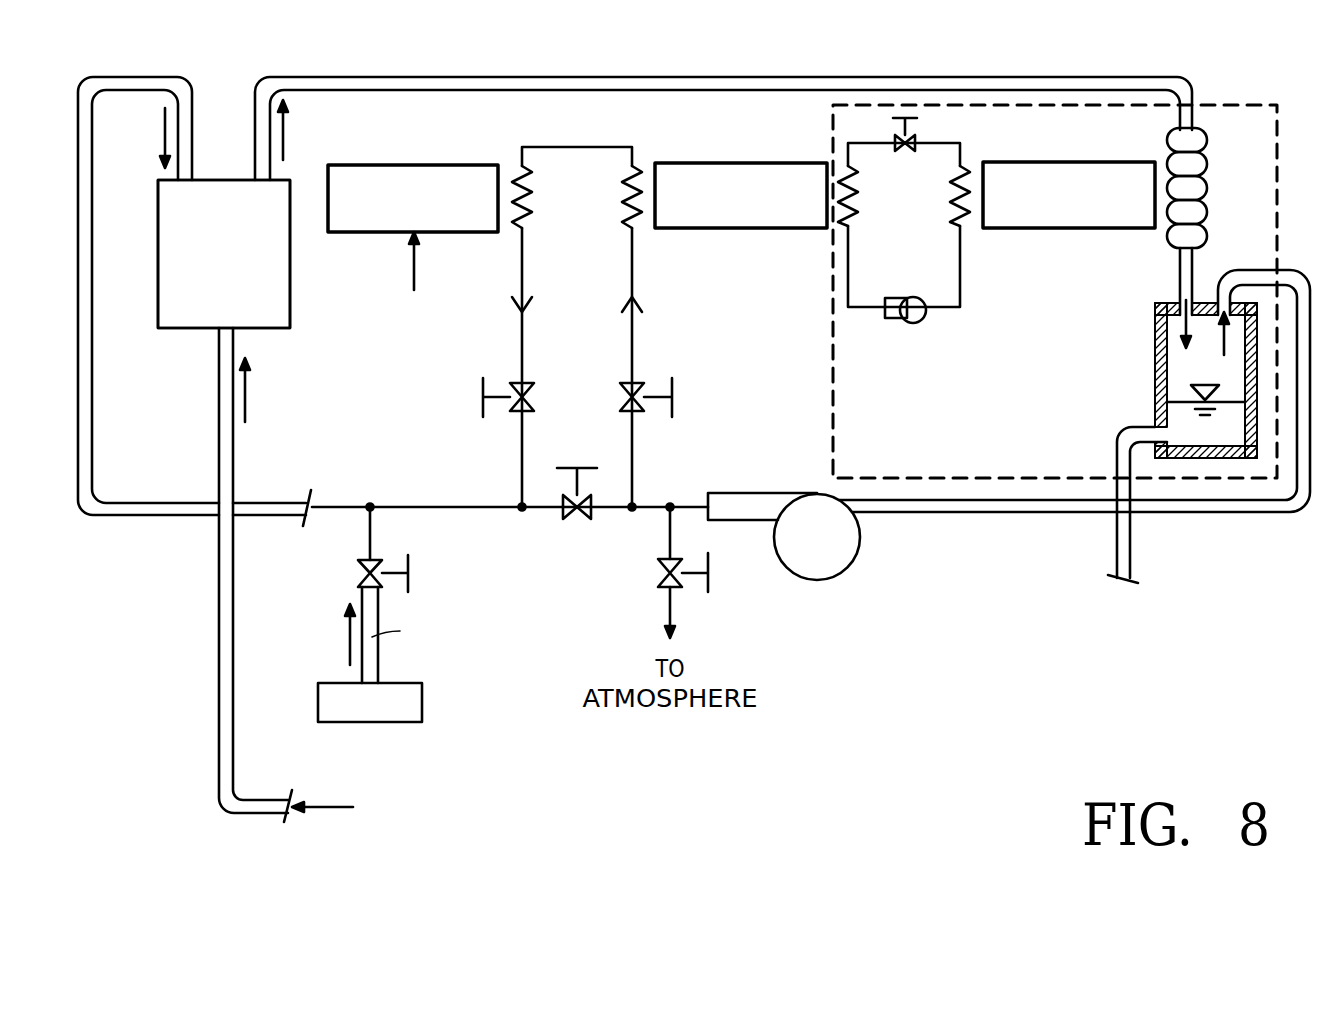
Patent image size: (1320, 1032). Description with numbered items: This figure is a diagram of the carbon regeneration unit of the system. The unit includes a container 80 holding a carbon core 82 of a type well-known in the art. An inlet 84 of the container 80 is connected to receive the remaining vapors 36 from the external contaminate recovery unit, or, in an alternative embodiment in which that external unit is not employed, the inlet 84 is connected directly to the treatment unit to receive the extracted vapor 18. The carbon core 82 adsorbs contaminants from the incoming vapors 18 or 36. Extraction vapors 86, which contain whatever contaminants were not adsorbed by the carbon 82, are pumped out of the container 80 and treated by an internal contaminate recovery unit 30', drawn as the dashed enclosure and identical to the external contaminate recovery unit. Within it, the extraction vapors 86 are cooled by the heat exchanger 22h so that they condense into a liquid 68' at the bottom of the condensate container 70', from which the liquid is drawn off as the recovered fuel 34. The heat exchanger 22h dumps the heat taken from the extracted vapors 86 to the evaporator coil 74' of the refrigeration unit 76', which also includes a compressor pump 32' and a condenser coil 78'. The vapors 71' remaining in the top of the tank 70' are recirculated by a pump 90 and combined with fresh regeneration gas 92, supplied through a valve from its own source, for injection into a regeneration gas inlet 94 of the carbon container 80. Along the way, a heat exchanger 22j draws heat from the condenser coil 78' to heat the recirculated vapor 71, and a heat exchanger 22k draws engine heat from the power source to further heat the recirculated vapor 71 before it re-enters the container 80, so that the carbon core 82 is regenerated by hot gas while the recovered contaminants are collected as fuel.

The extraction vapors 86 is at (270, 88).
The regeneration gas inlet 94 is at (183, 180).
The carbon core 82 is at (207, 280).
The container 80 is at (290, 330).
The inlet 84 is at (222, 332).
The remaining vapors 36 is at (280, 808).
The extracted vapor 18 is at (543, 824).
The recirculated vapor 71 is at (489, 482).
The heat exchanger 22k is at (405, 165).
The fresh regeneration gas 92 is at (422, 684).
The heat exchanger 22j is at (730, 228).
The pump 90 is at (845, 572).
The internal contaminate recovery unit 30' is at (1070, 264).
The refrigeration unit 76' is at (904, 212).
The condenser coil 78' is at (876, 196).
The evaporator coil 74' is at (932, 198).
The compressor pump 32' is at (916, 335).
The heat exchanger 22h is at (1015, 228).
The condensate container 70' is at (1175, 380).
The liquid 68' is at (1169, 404).
The vapors 71' is at (1074, 369).
The recovered fuel 34 is at (1130, 557).